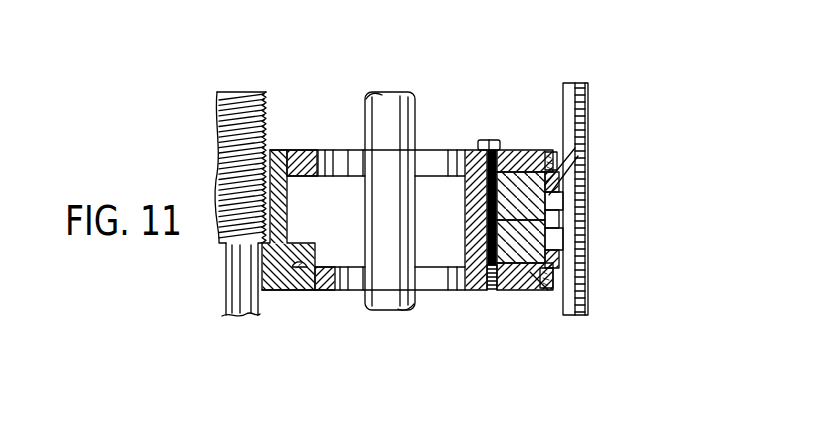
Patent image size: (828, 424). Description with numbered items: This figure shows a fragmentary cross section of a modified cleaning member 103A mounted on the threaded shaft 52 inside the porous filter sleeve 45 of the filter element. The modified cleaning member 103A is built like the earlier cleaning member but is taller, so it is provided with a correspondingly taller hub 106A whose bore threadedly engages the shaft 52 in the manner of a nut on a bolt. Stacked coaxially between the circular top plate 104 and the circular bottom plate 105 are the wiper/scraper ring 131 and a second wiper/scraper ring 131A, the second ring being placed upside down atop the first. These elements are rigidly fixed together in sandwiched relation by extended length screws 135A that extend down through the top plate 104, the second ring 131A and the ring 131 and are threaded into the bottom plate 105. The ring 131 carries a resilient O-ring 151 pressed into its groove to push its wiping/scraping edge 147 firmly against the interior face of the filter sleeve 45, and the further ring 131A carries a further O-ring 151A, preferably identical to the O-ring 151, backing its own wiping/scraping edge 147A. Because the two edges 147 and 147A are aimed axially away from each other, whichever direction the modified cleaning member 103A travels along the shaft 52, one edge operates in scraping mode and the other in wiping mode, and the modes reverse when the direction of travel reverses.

The shaft 52 is at (215, 124).
The taller hub 106A is at (280, 150).
The modified cleaning member 103A is at (428, 93).
The extended length screws 135A is at (478, 140).
The top plate 104 is at (586, 140).
The further O-ring 151A is at (557, 162).
The wiping/scraping edge 147A is at (559, 180).
The second wiper/scraper ring 131A is at (563, 203).
The filter sleeve 45 is at (559, 218).
The ring 131 is at (563, 235).
The wiping/scraping edge 147 is at (559, 258).
The O-ring 151 is at (555, 284).
The bottom plate 105 is at (530, 272).